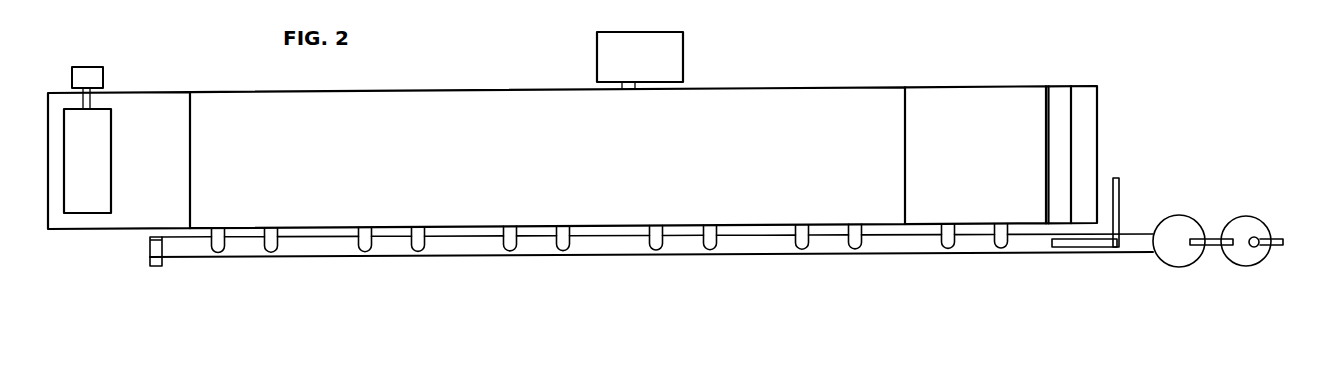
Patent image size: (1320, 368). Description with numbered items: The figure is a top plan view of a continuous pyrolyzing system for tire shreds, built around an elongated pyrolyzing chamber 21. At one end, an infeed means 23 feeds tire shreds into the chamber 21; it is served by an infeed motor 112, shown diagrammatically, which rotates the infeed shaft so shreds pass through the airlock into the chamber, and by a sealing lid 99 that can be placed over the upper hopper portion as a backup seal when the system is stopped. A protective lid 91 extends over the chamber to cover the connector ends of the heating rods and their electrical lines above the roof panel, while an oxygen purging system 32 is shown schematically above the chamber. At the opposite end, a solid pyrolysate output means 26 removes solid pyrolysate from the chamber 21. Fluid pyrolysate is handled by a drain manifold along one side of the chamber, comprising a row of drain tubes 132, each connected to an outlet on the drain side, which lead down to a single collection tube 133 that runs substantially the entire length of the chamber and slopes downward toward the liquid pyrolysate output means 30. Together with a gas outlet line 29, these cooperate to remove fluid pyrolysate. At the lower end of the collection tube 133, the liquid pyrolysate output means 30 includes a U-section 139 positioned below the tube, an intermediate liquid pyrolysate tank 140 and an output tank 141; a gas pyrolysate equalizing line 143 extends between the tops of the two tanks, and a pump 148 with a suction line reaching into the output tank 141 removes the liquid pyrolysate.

The pyrolyzing chamber 21 is at (980, 170).
The infeed means 23 is at (108, 102).
The solid pyrolysate output means 26 is at (1113, 100).
The gas outlet line 29 is at (1120, 188).
The liquid pyrolysate output means 30 is at (1228, 222).
The oxygen purging system 32 is at (656, 65).
The protective lid 91 is at (466, 188).
The sealing lid 99 is at (90, 189).
The infeed motor 112 is at (86, 80).
The drain tubes 132 is at (800, 243).
The collection tube 133 is at (458, 253).
The U-section 139 is at (1132, 247).
The intermediate liquid pyrolysate tank 140 is at (1179, 252).
The output tank 141 is at (1243, 257).
The gas pyrolysate equalizing line 143 is at (1208, 232).
The pump 148 is at (1256, 237).